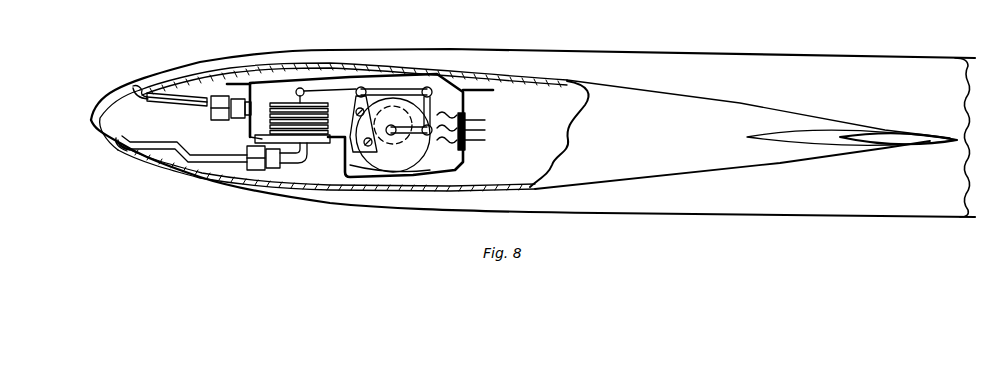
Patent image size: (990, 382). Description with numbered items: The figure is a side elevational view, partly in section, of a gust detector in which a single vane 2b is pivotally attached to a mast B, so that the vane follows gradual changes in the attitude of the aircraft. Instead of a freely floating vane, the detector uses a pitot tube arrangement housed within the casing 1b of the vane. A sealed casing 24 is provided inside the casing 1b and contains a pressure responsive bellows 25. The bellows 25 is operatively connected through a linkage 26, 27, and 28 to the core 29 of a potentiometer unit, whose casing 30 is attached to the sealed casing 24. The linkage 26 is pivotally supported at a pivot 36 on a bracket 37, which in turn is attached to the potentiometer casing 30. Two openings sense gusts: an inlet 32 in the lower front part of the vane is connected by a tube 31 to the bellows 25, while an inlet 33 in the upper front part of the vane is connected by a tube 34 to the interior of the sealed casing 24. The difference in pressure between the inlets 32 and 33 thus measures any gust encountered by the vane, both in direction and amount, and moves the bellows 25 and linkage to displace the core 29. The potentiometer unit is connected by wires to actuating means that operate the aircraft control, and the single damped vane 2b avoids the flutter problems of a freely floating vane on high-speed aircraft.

The mast B is at (884, 42).
The casing 1b is at (120, 100).
The vane 2b is at (907, 118).
The sealed casing 24 is at (294, 74).
The pressure responsive bellows 25 is at (320, 140).
The linkage 26 is at (388, 95).
The linkage 27 is at (429, 108).
The linkage 28 is at (410, 131).
The core of potentiometer unit 29 is at (408, 145).
The casing of potentiometer unit 30 is at (408, 161).
The tube 31 is at (201, 157).
The inlet 32 is at (124, 156).
The inlet 33 is at (146, 89).
The tube 34 is at (194, 99).
The pivot 36 is at (363, 91).
The bracket 37 is at (357, 112).